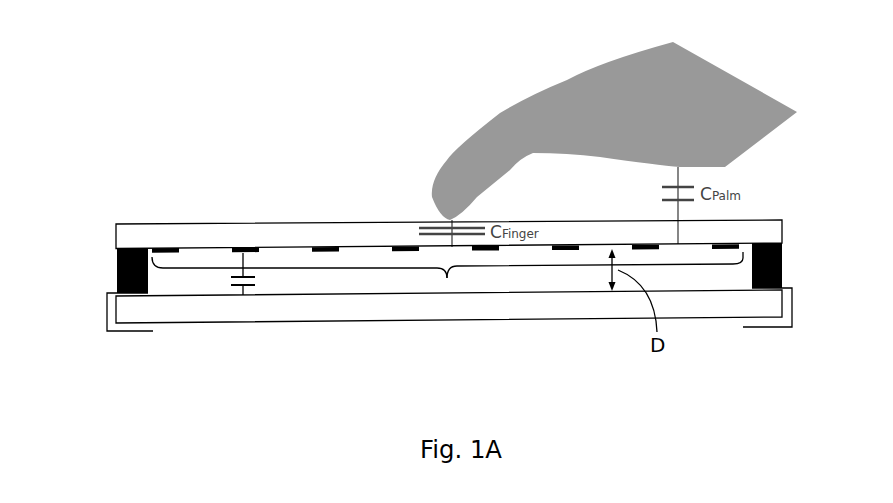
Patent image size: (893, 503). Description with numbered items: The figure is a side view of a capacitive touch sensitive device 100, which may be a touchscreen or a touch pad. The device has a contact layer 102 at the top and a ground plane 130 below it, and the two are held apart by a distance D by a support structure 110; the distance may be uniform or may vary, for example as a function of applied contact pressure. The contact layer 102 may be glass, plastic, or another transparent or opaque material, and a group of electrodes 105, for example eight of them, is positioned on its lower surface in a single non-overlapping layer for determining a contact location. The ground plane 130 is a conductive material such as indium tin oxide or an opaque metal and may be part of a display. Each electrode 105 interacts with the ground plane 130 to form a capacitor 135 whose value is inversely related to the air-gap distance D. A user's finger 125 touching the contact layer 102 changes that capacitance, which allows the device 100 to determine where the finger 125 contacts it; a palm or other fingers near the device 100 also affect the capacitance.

The touch sensitive device 100 is at (64, 151).
The contact layer 102 is at (197, 224).
The electrodes 105 is at (447, 278).
The support structure 110 is at (117, 282).
The user's finger 125 is at (452, 158).
The ground plane 130 is at (187, 323).
The capacitor 135 is at (347, 282).